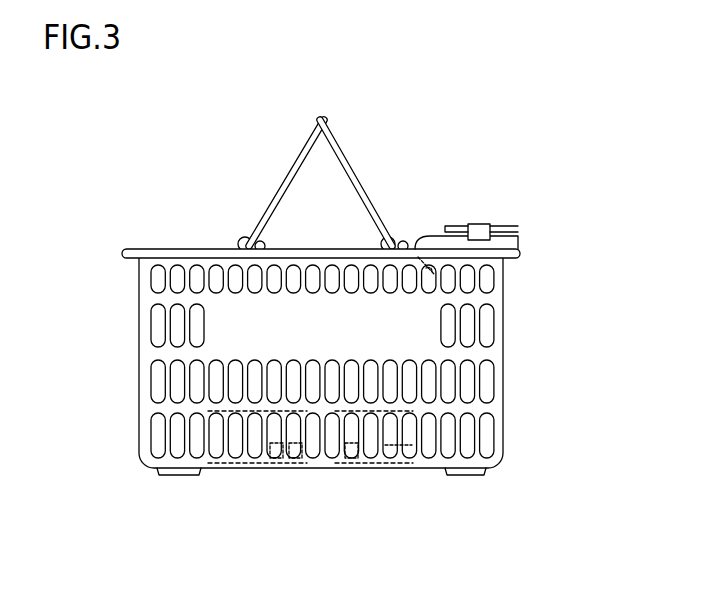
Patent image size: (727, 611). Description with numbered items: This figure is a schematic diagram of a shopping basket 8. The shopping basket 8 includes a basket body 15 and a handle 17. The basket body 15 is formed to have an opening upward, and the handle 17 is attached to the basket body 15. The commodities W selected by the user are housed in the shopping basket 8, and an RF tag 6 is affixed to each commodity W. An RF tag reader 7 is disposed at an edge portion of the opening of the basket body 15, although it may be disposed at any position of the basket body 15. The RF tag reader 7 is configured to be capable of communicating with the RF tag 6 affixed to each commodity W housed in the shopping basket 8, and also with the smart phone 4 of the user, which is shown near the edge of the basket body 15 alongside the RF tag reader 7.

The shopping basket 8 is at (321, 143).
The basket body 15 is at (202, 249).
The handle 17 is at (287, 163).
The RF tag reader 7 is at (458, 238).
The smart phone 4 is at (494, 224).
The RF tag 6 is at (293, 455).
The commodities W is at (392, 516).